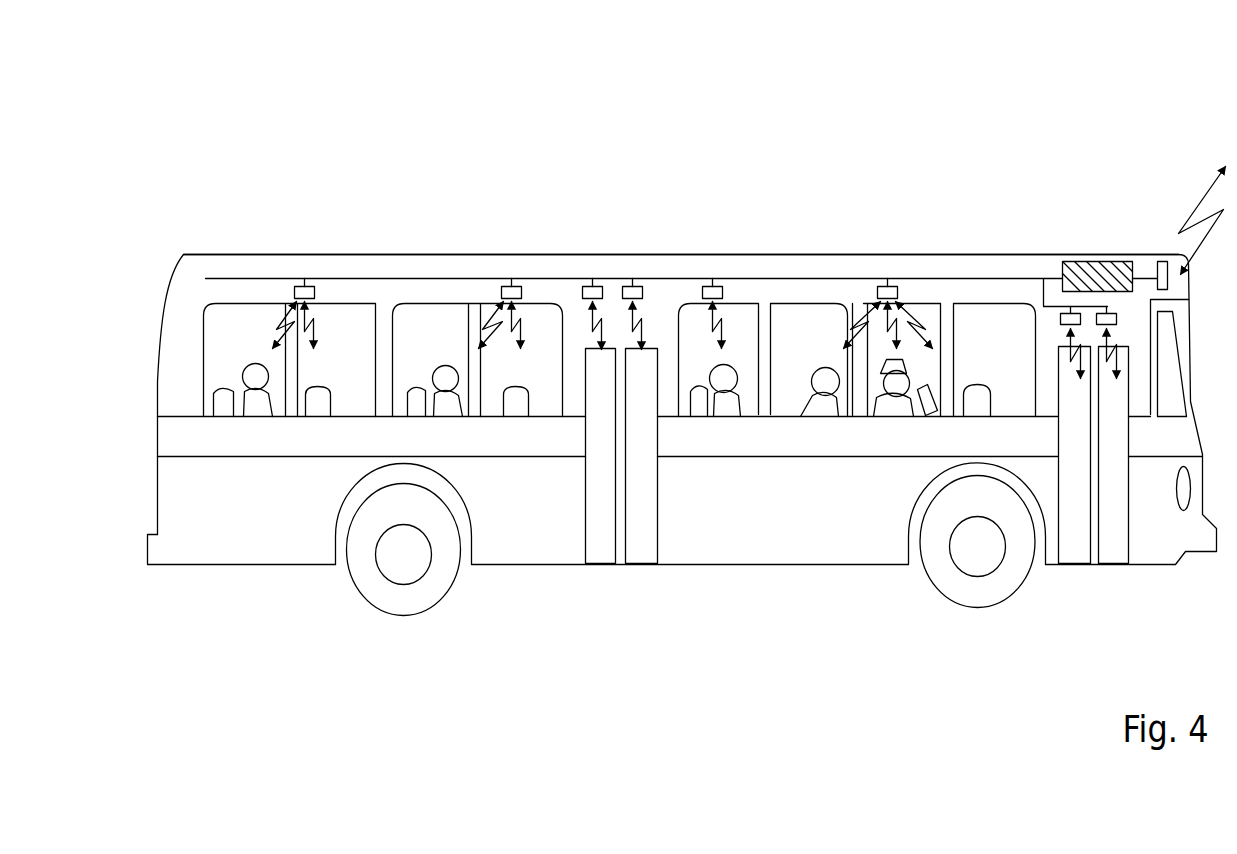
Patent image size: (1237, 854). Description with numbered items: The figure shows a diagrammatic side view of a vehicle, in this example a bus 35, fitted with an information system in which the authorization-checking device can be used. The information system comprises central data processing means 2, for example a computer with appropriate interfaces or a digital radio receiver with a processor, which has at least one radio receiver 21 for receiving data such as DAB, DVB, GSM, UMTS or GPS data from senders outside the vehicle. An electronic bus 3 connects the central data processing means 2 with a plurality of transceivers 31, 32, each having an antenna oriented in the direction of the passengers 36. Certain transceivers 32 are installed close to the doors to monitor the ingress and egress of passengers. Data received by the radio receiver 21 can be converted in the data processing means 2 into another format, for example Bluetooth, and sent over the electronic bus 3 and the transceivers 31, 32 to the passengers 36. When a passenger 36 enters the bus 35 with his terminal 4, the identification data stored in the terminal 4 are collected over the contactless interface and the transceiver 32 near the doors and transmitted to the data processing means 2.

The bus 35 is at (692, 148).
The electronic bus 3 is at (850, 277).
The central data processing means 2 is at (1097, 273).
The radio receiver 21 is at (1160, 273).
The transceiver 31 is at (300, 283).
The transceiver 32 is at (631, 283).
The passenger 36 is at (830, 410).
The terminal 4 is at (920, 413).